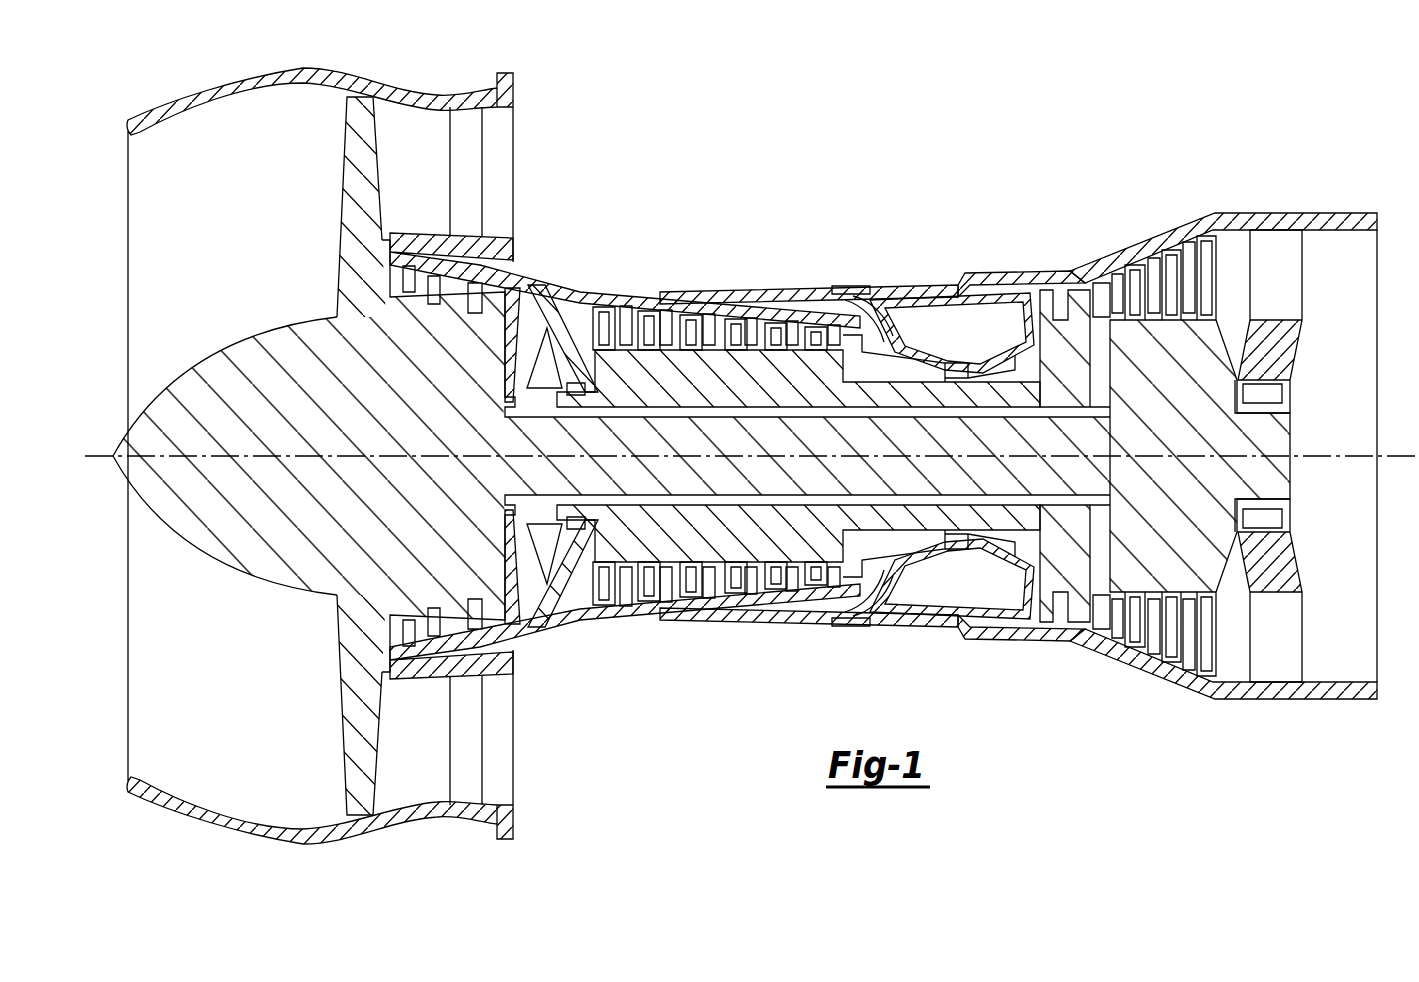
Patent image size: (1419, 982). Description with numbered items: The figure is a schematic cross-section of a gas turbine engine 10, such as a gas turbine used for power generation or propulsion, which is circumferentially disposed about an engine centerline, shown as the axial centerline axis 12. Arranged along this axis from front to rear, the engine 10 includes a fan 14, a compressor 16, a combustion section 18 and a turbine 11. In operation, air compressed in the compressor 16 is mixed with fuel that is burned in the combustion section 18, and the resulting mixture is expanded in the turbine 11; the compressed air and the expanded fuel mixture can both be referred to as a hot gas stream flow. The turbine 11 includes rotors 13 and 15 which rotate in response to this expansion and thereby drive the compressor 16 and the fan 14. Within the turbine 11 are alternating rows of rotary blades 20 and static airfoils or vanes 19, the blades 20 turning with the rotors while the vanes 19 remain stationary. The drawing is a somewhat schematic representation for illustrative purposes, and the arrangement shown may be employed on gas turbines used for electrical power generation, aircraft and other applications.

The gas turbine engine 10 is at (526, 151).
The turbine 11 is at (1037, 267).
The axial centerline axis 12 is at (290, 452).
The rotor 13 is at (1073, 362).
The fan 14 is at (343, 173).
The rotor 15 is at (1135, 548).
The compressor 16 is at (823, 287).
The combustion section 18 is at (1030, 263).
The static airfoils or vanes 19 is at (1137, 272).
The rotary blades 20 is at (1155, 280).